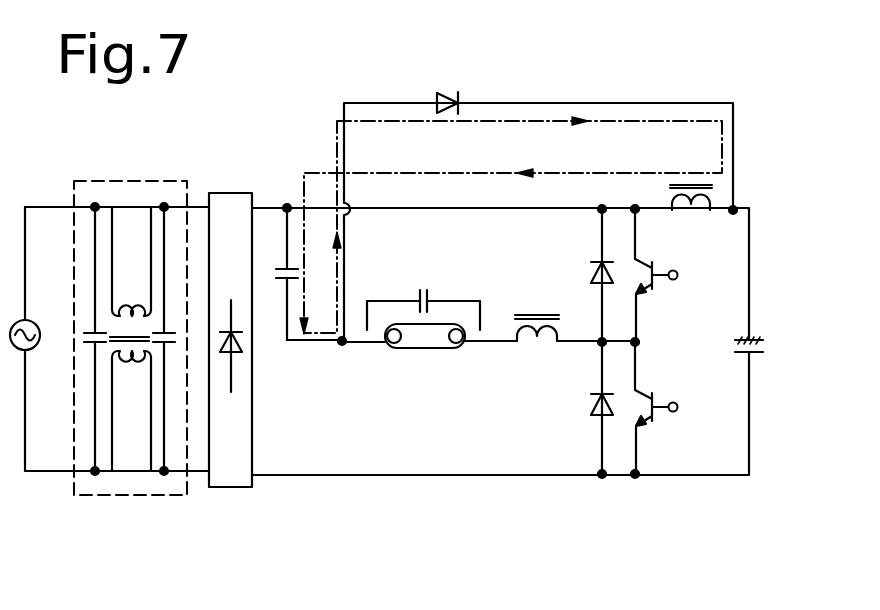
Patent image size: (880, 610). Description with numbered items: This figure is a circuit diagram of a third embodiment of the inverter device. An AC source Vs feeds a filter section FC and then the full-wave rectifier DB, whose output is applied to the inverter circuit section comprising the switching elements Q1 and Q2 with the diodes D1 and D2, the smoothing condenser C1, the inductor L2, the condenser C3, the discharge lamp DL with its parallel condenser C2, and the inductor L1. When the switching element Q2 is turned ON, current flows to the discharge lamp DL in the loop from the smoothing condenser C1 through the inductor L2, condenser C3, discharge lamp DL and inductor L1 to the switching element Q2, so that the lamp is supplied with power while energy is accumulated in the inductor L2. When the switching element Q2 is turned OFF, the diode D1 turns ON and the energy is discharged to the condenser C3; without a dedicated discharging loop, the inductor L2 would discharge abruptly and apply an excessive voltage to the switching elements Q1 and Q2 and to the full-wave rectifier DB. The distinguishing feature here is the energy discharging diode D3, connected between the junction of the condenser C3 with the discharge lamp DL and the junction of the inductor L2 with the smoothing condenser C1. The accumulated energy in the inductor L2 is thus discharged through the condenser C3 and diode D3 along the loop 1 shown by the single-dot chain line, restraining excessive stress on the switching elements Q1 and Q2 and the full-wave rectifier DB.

The AC power source Vs is at (36, 318).
The filter circuit FC is at (128, 497).
The full-wave rectifier DB is at (232, 319).
The condenser C3 is at (272, 275).
The diode D3 is at (537, 200).
The current path 1 is at (502, 122).
The capacitor C2 is at (423, 293).
The discharge lamp DL is at (420, 350).
The inductor L1 is at (538, 349).
The inductor L2 is at (696, 215).
The diode D1 is at (583, 275).
The diode D2 is at (580, 410).
The switching element Q1 is at (661, 275).
The switching element Q2 is at (658, 410).
The smoothing condenser C1 is at (765, 360).